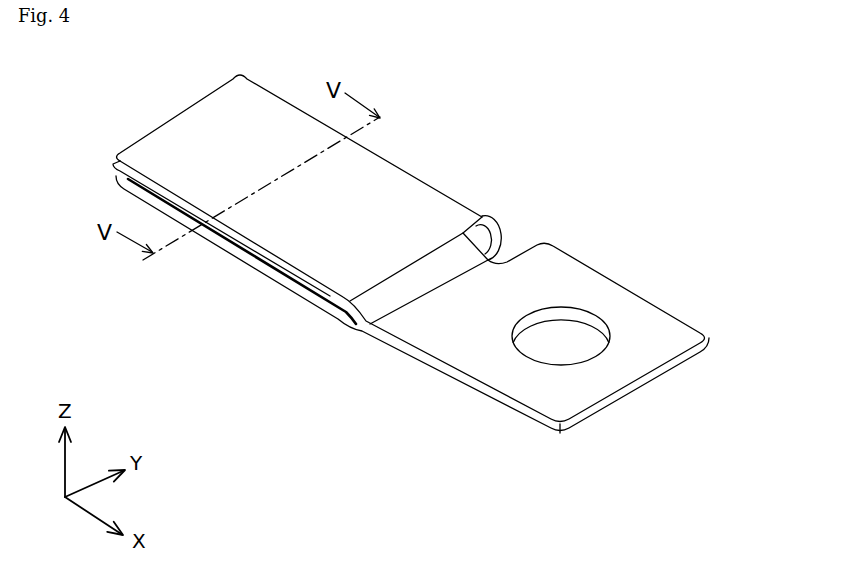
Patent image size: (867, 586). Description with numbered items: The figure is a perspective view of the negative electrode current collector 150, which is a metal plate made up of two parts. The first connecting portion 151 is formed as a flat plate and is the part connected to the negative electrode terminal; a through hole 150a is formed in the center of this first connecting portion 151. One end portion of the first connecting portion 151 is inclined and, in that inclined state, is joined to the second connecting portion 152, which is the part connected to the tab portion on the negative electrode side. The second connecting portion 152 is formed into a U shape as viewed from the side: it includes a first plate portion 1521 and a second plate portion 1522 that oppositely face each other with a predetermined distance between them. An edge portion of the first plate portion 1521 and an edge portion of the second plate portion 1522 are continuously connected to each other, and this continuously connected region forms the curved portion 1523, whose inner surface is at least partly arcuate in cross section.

The negative electrode current collector 150 is at (481, 162).
The through hole 150a is at (524, 352).
The first connecting portion 151 is at (633, 303).
The second connecting portion 152 is at (148, 116).
The first plate portion 1521 is at (275, 228).
The second plate portion 1522 is at (285, 285).
The curved portion 1523 is at (498, 223).